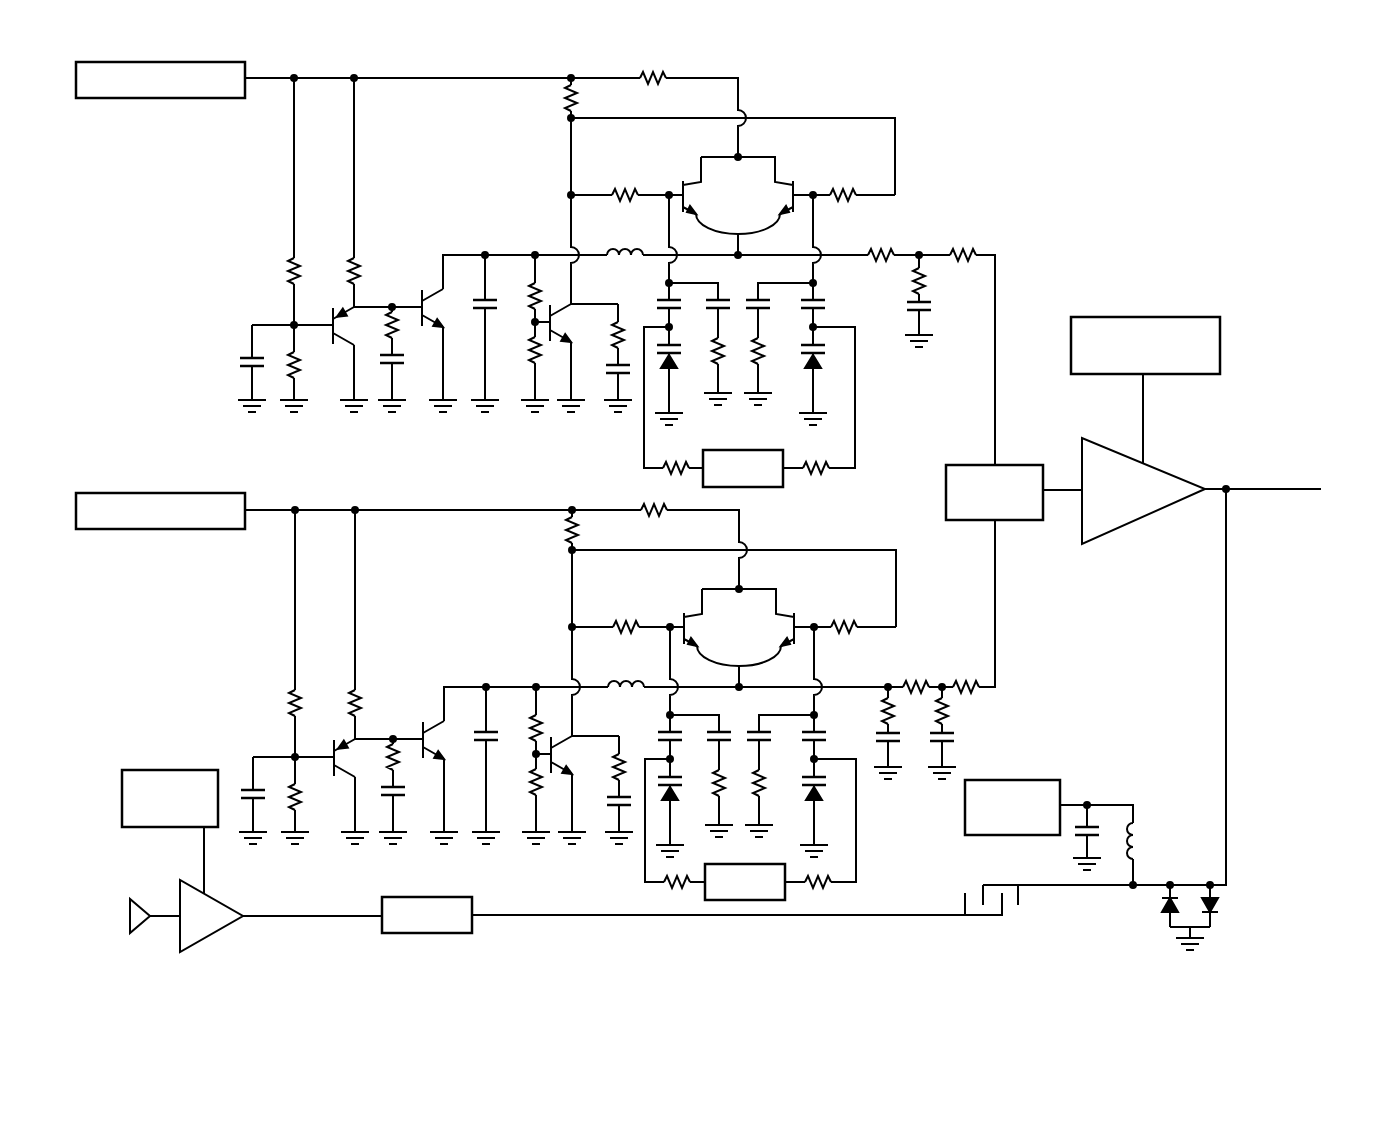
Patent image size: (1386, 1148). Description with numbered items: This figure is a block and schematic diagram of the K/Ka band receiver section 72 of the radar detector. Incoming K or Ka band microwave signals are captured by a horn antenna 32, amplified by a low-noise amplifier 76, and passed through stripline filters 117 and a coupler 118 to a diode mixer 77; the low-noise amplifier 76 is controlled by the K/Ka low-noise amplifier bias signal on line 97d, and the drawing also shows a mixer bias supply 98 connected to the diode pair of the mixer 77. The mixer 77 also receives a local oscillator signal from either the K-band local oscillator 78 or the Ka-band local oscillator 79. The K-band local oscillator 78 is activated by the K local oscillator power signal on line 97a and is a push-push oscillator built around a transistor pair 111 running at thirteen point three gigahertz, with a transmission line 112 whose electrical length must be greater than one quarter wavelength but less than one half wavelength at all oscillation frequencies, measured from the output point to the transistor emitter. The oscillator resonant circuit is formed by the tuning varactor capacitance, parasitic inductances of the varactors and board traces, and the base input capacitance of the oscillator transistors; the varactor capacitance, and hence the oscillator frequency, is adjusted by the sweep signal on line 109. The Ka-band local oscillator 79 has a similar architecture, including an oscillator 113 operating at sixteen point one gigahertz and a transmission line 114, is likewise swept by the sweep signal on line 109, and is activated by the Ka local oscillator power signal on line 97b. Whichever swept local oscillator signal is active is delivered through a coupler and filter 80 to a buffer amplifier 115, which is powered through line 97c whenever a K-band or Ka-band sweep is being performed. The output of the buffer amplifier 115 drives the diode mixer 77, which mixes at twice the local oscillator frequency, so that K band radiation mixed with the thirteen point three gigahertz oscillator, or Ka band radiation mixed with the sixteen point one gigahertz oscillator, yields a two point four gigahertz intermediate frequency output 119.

The K/Ka band receiver section 72 is at (1029, 172).
The K local oscillator power signal line 97a is at (170, 99).
The Ka local oscillator power signal line 97b is at (170, 530).
The K/Ka buffer amplifier power signal line 97c is at (1139, 317).
The K/Ka low-noise amplifier bias signal line 97d is at (160, 770).
The K-band local oscillator 78 is at (901, 113).
The Ka-band local oscillator 79 is at (845, 545).
The transistor pair 111 is at (770, 175).
The transmission line 112 is at (768, 232).
The oscillator 113 is at (772, 607).
The transmission line 114 is at (766, 665).
The sweep signal line 109 is at (742, 450).
The coupler and filter 80 is at (1010, 465).
The buffer amplifier 115 is at (1163, 467).
The intermediate frequency output 119 is at (1315, 470).
The mixer bias 98 is at (1010, 780).
The diode mixer 77 is at (1170, 927).
The coupler 118 is at (1010, 908).
The stripline filters 117 is at (455, 897).
The low-noise amplifier 76 is at (215, 895).
The horn antenna 32 is at (130, 899).